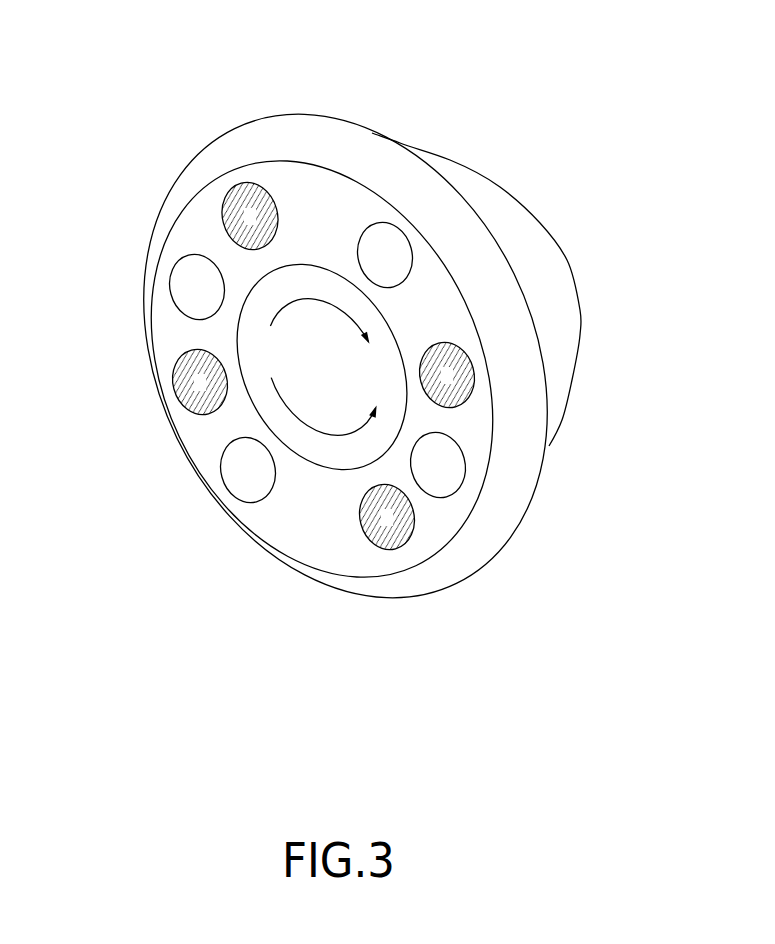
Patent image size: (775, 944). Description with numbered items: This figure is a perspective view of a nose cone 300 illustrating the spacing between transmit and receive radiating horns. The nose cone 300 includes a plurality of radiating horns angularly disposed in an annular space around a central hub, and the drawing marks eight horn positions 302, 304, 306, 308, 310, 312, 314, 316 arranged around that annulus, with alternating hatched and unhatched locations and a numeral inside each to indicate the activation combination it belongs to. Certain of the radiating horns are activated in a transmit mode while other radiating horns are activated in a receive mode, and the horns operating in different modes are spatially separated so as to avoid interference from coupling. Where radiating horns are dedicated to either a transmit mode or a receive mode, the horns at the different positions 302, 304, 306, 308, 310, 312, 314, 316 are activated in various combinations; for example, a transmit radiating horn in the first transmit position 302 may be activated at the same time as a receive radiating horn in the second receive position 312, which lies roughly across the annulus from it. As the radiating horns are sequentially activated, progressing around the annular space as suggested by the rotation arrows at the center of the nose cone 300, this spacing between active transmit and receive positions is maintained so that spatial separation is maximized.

The nose cone 300 is at (592, 58).
The first transmit position 302 is at (236, 192).
The radiating horn position 304 is at (464, 397).
The radiating horn position 306 is at (397, 545).
The radiating horn position 308 is at (182, 396).
The radiating horn position 310 is at (249, 493).
The second receive position 312 is at (453, 488).
The radiating horn position 314 is at (386, 233).
The radiating horn position 316 is at (178, 269).